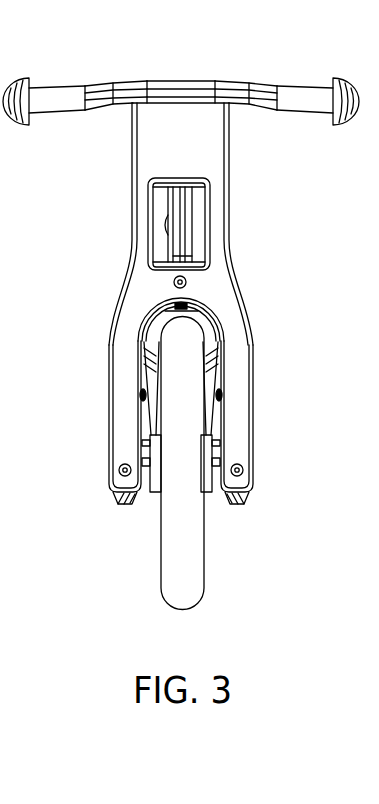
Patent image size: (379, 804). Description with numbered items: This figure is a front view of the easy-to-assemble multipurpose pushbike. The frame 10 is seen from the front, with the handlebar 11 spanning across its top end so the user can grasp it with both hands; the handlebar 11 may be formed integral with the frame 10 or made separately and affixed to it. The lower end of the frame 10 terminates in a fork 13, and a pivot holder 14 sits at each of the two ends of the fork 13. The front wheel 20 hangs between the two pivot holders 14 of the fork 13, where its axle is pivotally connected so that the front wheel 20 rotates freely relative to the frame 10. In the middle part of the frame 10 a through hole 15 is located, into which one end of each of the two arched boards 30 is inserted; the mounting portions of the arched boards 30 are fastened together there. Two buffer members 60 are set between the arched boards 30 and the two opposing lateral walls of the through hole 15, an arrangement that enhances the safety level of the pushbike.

The frame 10 is at (208, 147).
The handlebar 11 is at (300, 92).
The fork 13 is at (240, 385).
The pivot holder 14 is at (244, 471).
The through hole 15 is at (197, 270).
The front wheel 20 is at (188, 568).
The arched board 30 is at (173, 208).
The buffer member 60 is at (200, 209).